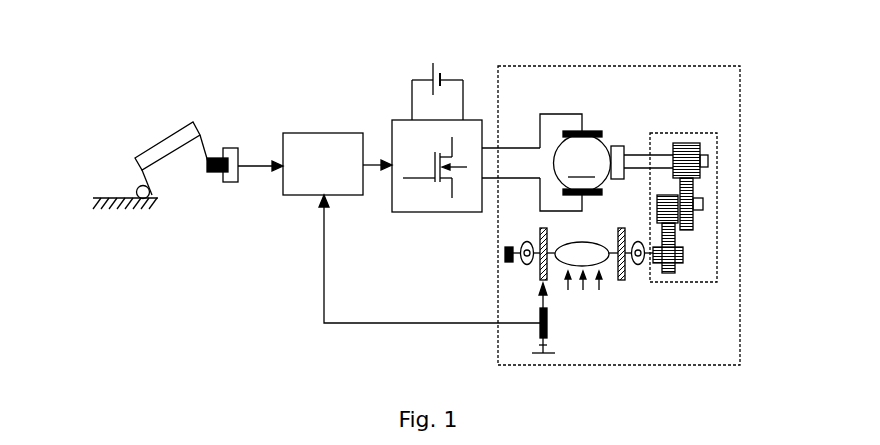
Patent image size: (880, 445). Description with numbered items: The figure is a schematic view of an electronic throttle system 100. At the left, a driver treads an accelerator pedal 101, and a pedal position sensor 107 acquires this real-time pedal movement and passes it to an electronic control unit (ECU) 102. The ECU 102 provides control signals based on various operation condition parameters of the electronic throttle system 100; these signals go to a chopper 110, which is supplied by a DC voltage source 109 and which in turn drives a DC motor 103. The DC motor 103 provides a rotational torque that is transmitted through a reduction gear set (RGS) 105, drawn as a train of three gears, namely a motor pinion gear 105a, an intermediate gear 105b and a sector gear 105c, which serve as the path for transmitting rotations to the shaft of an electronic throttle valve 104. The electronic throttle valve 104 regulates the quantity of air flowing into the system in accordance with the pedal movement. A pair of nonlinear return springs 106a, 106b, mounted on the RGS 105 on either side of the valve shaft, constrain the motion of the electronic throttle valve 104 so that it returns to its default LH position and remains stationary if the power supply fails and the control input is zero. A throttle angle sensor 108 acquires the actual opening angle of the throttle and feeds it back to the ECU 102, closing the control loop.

The electronic throttle system 100 is at (687, 66).
The accelerator pedal 101 is at (165, 137).
The electronic control unit (ECU) 102 is at (325, 132).
The DC motor 103 is at (592, 128).
The electronic throttle valve 104 is at (603, 270).
The reduction gear set (RGS) 105 is at (687, 133).
The motor pinion gear 105a is at (708, 161).
The intermediate gear 105b is at (703, 204).
The sector gear 105c is at (683, 255).
The nonlinear return spring 106a is at (640, 263).
The nonlinear return spring 106b is at (522, 260).
The pedal position sensor 107 is at (217, 173).
The throttle angle sensor 108 is at (540, 323).
The DC voltage source 109 is at (440, 65).
The chopper 110 is at (437, 212).